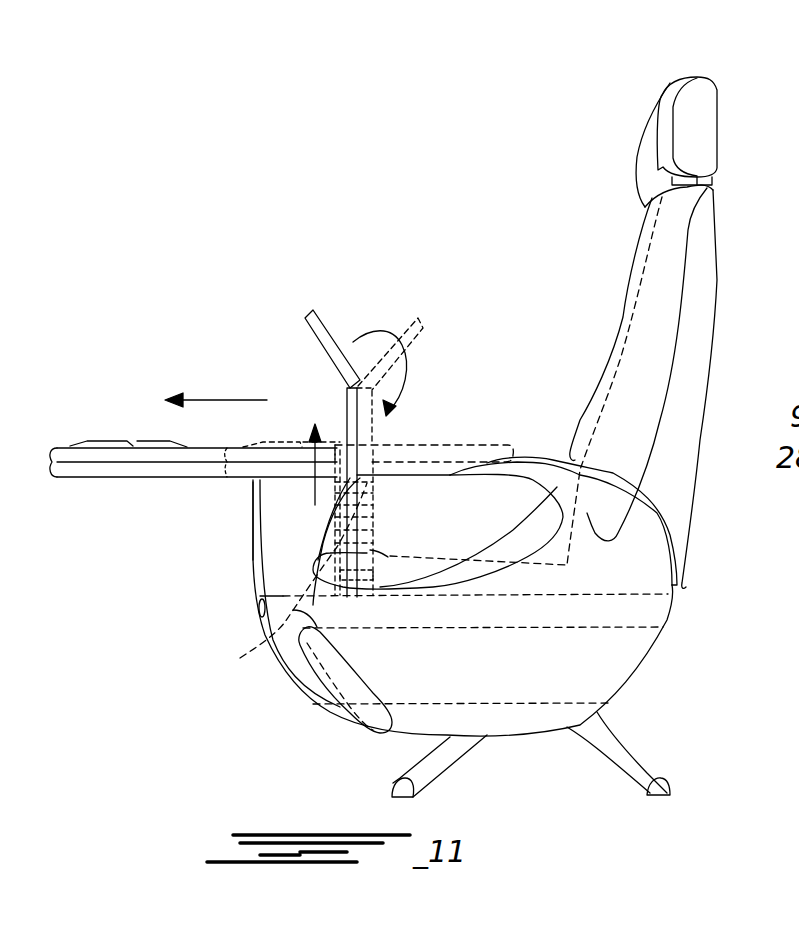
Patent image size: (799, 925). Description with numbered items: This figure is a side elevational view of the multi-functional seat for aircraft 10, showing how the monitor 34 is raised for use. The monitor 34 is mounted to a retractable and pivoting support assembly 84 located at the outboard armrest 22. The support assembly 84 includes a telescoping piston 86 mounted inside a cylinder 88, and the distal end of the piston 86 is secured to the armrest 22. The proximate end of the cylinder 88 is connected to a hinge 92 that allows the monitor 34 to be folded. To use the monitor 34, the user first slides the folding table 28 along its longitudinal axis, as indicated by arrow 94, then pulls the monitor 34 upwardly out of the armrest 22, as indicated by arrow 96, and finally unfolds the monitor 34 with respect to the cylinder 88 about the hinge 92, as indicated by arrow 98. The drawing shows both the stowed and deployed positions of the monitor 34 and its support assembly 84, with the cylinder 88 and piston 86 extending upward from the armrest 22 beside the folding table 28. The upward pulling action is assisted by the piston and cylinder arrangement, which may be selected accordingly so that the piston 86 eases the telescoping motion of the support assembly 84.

The multi-functional seat for aircraft 10 is at (730, 129).
The outboard armrest 22 is at (253, 530).
The folding table 28 is at (119, 468).
The monitor 34 is at (318, 297).
The retractable and pivoting support assembly 84 is at (340, 418).
The telescoping piston 86 is at (286, 585).
The cylinder 88 is at (352, 433).
The hinge 92 is at (405, 375).
The arrow indicating sliding of the folding table 94 is at (217, 400).
The arrow indicating upward pulling of the monitor 96 is at (313, 488).
The arrow indicating unfolding of the monitor 98 is at (352, 342).